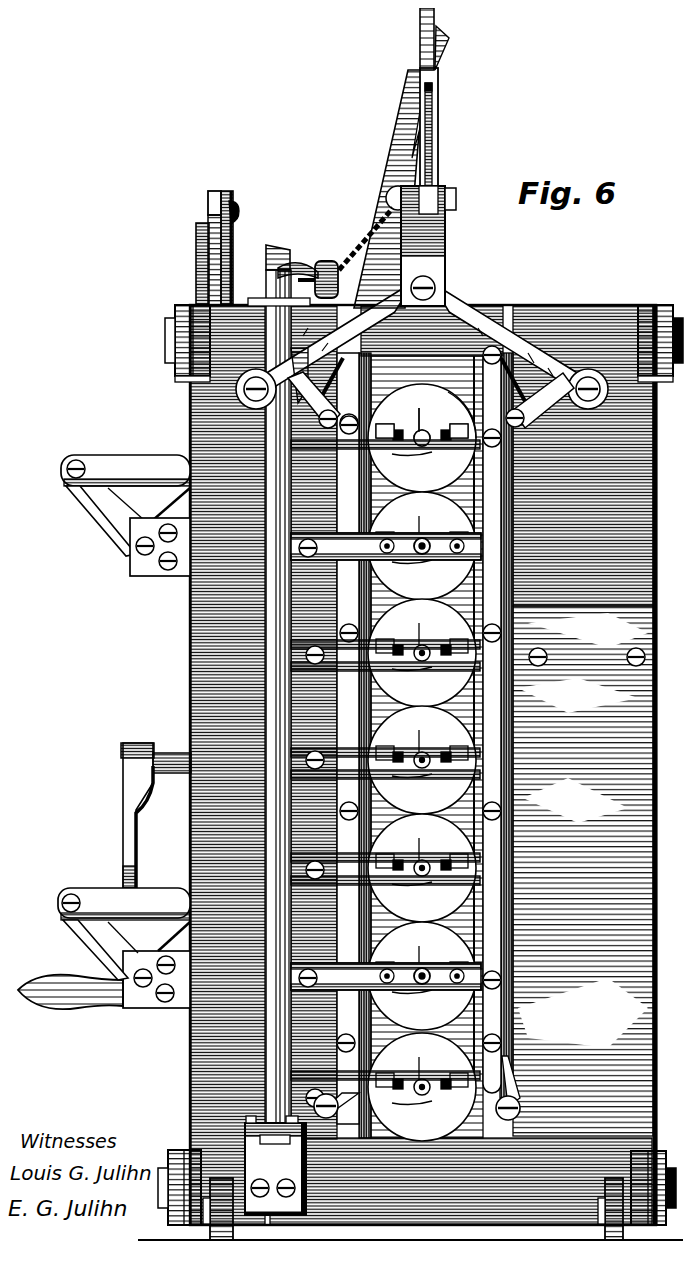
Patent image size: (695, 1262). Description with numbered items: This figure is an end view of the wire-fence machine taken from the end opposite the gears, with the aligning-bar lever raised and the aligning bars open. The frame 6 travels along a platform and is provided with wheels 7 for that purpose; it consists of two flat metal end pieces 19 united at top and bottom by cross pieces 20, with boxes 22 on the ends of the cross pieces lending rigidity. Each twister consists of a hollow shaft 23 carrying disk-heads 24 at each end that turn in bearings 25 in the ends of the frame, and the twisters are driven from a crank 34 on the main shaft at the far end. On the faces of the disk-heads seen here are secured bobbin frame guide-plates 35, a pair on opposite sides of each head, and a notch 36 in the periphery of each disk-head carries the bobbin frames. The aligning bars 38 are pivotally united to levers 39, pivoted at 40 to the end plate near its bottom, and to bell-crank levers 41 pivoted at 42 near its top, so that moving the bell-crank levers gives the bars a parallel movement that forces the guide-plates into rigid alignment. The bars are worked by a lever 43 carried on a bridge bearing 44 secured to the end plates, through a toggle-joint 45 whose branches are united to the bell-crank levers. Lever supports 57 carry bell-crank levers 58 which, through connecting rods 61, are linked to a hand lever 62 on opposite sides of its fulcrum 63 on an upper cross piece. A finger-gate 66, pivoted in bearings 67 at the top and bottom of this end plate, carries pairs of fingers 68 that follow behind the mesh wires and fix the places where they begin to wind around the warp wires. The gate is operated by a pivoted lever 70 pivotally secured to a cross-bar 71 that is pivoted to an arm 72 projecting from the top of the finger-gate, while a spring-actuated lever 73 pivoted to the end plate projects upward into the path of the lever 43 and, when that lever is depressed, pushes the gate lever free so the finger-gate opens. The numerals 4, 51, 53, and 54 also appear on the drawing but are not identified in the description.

The axle pin 4 is at (429, 756).
The frame 6 is at (649, 738).
The wheels 7 is at (415, 1209).
The end pieces 19 is at (583, 721).
The cross pieces 20 is at (176, 368).
The boxes 22 is at (168, 297).
The hollow shaft 23 is at (432, 425).
The disk-heads 24 is at (426, 782).
The bearings 25 is at (462, 480).
The crank 34 is at (160, 835).
The bobbin frame guide-plates 35 is at (380, 422).
The notch 36 is at (396, 753).
The aligning bars 38 is at (339, 1014).
The levers 39 is at (510, 1090).
The pivot 40 is at (512, 1100).
The bell-crank levers 41 is at (422, 353).
The pivot 42 is at (431, 395).
The lever 43 is at (427, 15).
The bridge bearing 44 is at (440, 112).
The toggle-joint 45 is at (437, 255).
The plate 51 is at (156, 763).
The brace 53 is at (128, 521).
The arm 54 is at (122, 465).
The lever supports 57 is at (104, 948).
The bell-crank levers 58 is at (126, 950).
The connecting rods 61 is at (232, 212).
The hand lever 62 is at (206, 183).
The fulcrum or pivotal support 63 is at (188, 228).
The finger-gate 66 is at (258, 460).
The bearings 67 is at (250, 290).
The fingers 68 is at (290, 650).
The pivoted lever 70 is at (270, 237).
The cross-bar 71 is at (295, 258).
The arm 72 is at (338, 276).
The lever 73 is at (392, 150).